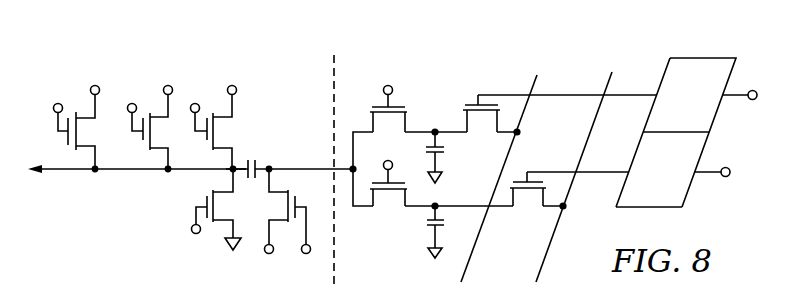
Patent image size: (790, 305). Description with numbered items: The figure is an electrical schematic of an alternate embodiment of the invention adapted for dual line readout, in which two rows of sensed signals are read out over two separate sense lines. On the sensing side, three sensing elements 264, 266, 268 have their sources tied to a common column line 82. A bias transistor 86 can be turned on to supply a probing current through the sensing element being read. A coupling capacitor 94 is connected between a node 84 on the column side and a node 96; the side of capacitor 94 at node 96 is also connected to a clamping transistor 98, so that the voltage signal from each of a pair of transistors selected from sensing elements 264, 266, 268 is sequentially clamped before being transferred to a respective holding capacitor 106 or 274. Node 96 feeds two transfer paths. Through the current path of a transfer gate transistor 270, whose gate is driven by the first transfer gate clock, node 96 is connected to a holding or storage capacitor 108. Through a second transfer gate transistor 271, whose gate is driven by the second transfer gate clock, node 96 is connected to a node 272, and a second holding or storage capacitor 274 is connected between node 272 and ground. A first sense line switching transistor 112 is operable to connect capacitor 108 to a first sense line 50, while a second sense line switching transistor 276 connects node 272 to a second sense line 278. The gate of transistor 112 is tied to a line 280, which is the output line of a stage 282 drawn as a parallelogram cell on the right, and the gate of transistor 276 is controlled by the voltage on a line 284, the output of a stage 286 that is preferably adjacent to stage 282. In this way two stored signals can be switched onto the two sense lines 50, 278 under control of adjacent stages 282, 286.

The first sense line 50 is at (548, 251).
The column line 82 is at (63, 170).
The node 84 is at (234, 169).
The bias transistor 86 is at (214, 236).
The coupling capacitor 94 is at (252, 179).
The node 96 is at (352, 169).
The clamping transistor 98 is at (299, 204).
The holding capacitor 106 is at (440, 211).
The holding or storage capacitor 108 is at (431, 228).
The first sense line switching transistor 112 is at (524, 216).
The sensing element 264 is at (80, 103).
The sensing element 266 is at (150, 102).
The sensing element 268 is at (215, 102).
The transfer gate transistor 270 is at (381, 218).
The second transfer gate transistor 271 is at (409, 111).
The node 272 is at (438, 134).
The second holding or storage capacitor 274 is at (444, 160).
The second sense line switching transistor 276 is at (471, 102).
The second sense line 278 is at (536, 88).
The line 280 is at (611, 173).
The stage 282 is at (652, 207).
The line 284 is at (630, 94).
The stage 286 is at (708, 58).